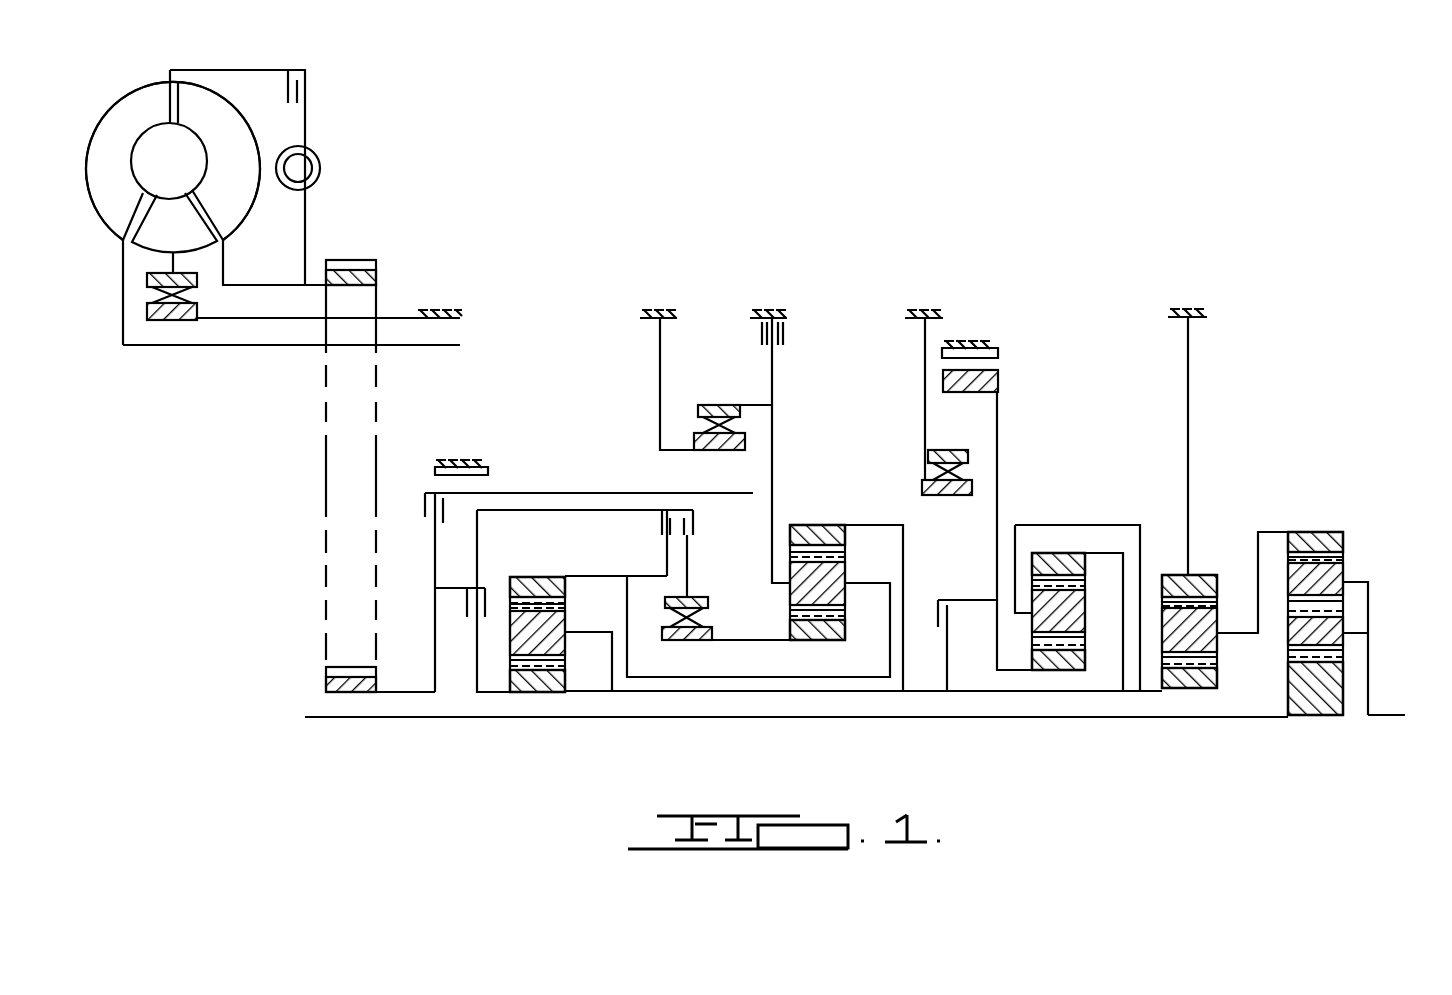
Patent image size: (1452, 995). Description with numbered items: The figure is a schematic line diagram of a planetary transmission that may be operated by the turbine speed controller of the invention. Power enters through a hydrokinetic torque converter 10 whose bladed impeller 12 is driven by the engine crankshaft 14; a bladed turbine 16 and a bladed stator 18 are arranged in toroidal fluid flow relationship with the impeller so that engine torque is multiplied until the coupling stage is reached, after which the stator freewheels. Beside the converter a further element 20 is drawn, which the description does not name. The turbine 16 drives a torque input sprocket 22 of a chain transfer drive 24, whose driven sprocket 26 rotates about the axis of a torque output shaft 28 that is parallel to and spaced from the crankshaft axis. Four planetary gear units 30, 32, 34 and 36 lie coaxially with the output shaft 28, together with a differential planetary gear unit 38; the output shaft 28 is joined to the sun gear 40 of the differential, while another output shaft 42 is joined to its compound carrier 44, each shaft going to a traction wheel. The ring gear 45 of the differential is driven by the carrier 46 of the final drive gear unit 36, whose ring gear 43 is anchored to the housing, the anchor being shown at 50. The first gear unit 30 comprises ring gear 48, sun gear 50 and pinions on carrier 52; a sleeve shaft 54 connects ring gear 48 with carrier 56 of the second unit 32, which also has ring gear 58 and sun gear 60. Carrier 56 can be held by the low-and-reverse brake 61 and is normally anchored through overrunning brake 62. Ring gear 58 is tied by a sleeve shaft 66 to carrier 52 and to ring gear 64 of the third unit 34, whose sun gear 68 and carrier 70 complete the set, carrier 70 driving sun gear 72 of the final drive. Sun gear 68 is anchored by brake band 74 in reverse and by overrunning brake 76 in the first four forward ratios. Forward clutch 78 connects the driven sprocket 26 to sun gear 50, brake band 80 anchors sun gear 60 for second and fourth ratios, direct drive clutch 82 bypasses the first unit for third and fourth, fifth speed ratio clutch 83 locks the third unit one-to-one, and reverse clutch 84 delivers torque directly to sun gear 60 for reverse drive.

The hydrokinetic torque converter 10 is at (152, 80).
The bladed impeller 12 is at (118, 171).
The crankshaft 14 is at (247, 346).
The bladed turbine 16 is at (233, 191).
The bladed stator 18 is at (181, 243).
The pump 20 is at (300, 123).
The torque input sprocket 22 is at (376, 263).
The chain transfer drive 24 is at (325, 608).
The driven sprocket 26 is at (325, 680).
The torque output shaft 28 is at (932, 718).
The first planetary gear unit 30 is at (525, 572).
The second planetary gear unit 32 is at (803, 521).
The third planetary gear unit 34 is at (1065, 549).
The fourth planetary gear unit 36 is at (1208, 569).
The differential planetary gear unit 38 is at (1319, 529).
The sun gear 40 is at (1298, 713).
The output shaft 42 is at (1395, 715).
The ring gear 43 is at (1173, 573).
The compound carrier 44 is at (1360, 582).
The ring gear 45 is at (1305, 537).
The carrier 46 is at (1222, 637).
The ring gear 48 is at (550, 580).
The sun gear 50 is at (533, 692).
The carrier 52 is at (603, 632).
The sleeve shaft 54 is at (773, 677).
The carrier 56 is at (903, 527).
The ring gear 58 is at (827, 524).
The sun gear 60 is at (837, 632).
The low-and-reverse brake 61 is at (762, 328).
The overrunning brake 62 is at (720, 423).
The ring gear 64 is at (1068, 553).
The sleeve shaft 66 is at (838, 691).
The sun gear 68 is at (1057, 670).
The carrier 70 is at (1023, 523).
The sun gear 72 is at (1202, 686).
The brake band 74 is at (978, 347).
The overrunning brake 76 is at (920, 470).
The forward clutch 78 is at (467, 610).
The brake band 80 is at (488, 471).
The direct drive clutch 82 is at (680, 532).
The fifth speed ratio clutch 83 is at (950, 617).
The reverse clutch 84 is at (425, 515).